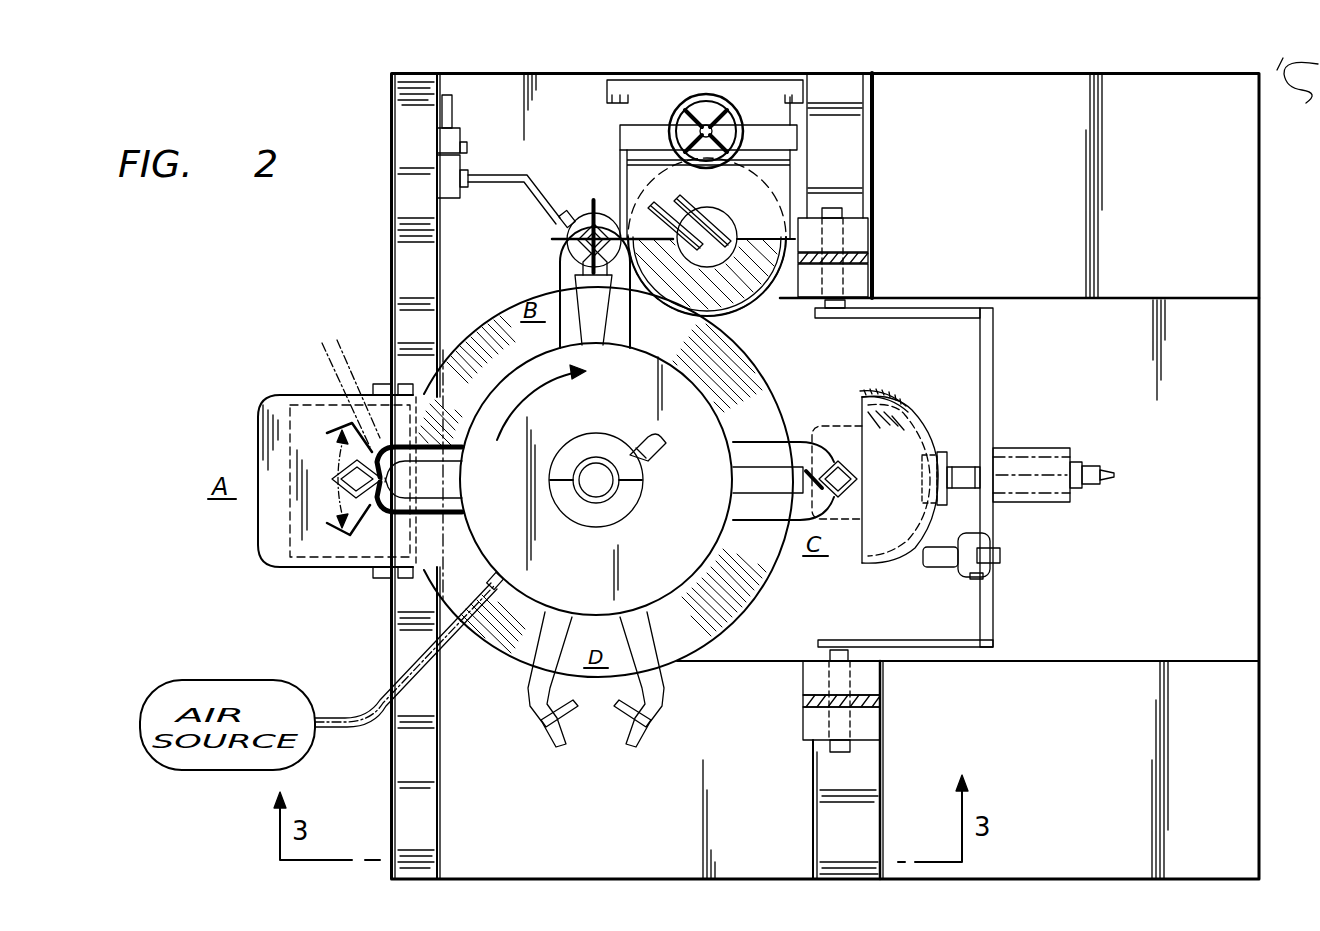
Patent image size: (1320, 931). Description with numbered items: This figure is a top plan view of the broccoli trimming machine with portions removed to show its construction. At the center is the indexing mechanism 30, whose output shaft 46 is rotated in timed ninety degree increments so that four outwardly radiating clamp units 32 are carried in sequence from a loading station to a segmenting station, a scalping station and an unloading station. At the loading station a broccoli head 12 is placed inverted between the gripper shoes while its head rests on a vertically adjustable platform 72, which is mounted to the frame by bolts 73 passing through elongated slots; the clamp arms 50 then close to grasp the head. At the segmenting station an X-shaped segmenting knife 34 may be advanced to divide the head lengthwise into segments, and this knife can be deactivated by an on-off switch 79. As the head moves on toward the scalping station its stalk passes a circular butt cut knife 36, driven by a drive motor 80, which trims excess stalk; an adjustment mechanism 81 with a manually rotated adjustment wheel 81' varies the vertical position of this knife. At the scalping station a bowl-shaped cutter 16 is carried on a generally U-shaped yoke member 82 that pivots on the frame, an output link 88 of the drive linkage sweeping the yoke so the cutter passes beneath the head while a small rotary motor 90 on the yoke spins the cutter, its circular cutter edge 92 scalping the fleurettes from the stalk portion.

The broccoli head 12 is at (820, 437).
The bowl-shaped cutter 16 is at (868, 562).
The central indexing mechanism 30 is at (686, 626).
The clamp unit 32 is at (552, 277).
The segmenting knife 34 is at (598, 196).
The butt cut knife 36 is at (725, 299).
The output shaft 46 is at (597, 477).
The clamp arms 50 is at (326, 389).
The platform 72 is at (277, 550).
The bolts 73 is at (393, 583).
The on-off switch 79 is at (473, 143).
The drive motor 80 is at (718, 216).
The adjustment mechanism 81 is at (705, 131).
The adjustment wheel 81' is at (688, 96).
The yoke member 82 is at (1001, 615).
The output link 88 is at (938, 568).
The rotary motor 90 is at (1043, 447).
The circular cutter edge 92 is at (860, 412).